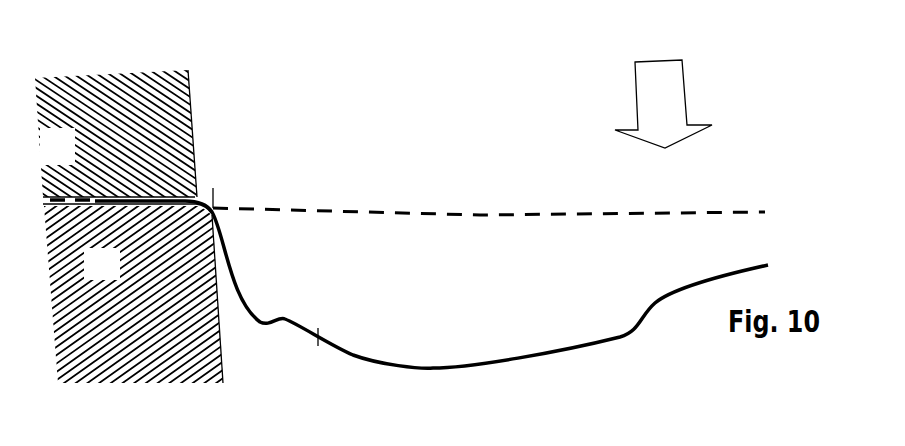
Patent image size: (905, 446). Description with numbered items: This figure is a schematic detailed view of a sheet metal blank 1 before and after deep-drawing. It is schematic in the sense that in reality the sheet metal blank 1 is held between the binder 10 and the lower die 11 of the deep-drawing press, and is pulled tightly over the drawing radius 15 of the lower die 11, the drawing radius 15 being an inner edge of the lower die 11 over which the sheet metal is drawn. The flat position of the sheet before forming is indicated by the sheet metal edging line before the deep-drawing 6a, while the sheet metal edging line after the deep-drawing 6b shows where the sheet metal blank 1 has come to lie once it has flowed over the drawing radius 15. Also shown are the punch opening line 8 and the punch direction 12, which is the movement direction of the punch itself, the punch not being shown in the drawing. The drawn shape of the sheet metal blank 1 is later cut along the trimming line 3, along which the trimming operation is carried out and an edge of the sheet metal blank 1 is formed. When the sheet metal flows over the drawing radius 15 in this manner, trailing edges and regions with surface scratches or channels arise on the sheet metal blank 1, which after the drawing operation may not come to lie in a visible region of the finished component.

The binder 10 is at (121, 73).
The lower die 11 is at (177, 372).
The sheet metal edging line before the deep-drawing 6a is at (45, 195).
The sheet metal edging line after the deep-drawing 6b is at (107, 212).
The drawing radius 15 is at (226, 221).
The punch opening line 8 is at (214, 190).
The trimming line 3 is at (318, 346).
The sheet metal blank 1 is at (468, 213).
The punch direction 12 is at (663, 104).